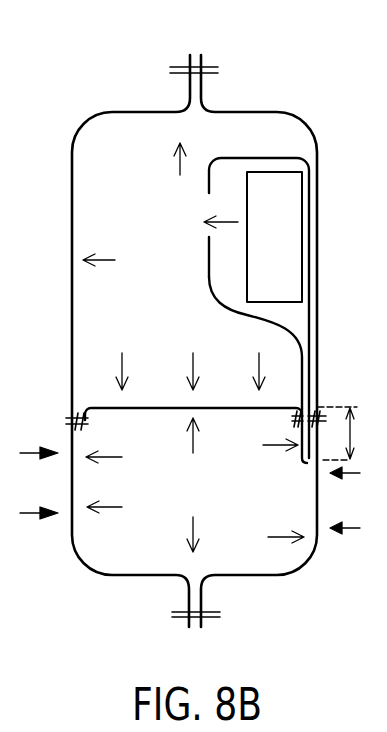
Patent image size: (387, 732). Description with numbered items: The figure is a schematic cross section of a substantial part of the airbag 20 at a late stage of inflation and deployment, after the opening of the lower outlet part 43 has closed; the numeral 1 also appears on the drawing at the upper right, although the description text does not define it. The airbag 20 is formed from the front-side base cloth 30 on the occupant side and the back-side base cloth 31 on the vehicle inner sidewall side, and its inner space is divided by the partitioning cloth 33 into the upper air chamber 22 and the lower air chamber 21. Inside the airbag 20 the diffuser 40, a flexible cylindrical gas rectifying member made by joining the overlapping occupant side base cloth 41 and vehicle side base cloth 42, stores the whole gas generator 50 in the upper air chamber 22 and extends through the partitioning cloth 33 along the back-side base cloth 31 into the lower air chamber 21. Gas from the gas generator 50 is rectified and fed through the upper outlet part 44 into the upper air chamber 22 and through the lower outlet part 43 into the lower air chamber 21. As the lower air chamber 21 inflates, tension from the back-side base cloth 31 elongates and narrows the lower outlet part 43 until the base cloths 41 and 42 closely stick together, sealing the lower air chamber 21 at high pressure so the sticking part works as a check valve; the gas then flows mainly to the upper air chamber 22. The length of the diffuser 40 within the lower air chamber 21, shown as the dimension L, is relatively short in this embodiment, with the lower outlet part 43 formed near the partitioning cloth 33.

The gas-liquid separator 1 is at (268, 96).
The airbag 20 is at (147, 95).
The lower air chamber 21 is at (132, 540).
The upper air chamber 22 is at (92, 214).
The front-side base cloth 30 is at (72, 485).
The back-side base cloth 31 is at (317, 495).
The partitioning cloth 33 is at (113, 407).
The diffuser 40 is at (302, 367).
The occupant side base cloth 41 is at (265, 327).
The vehicle side base cloth 42 is at (309, 328).
The lower outlet part 43 is at (308, 462).
The upper outlet part 44 is at (209, 200).
The gas generator 50 is at (290, 234).